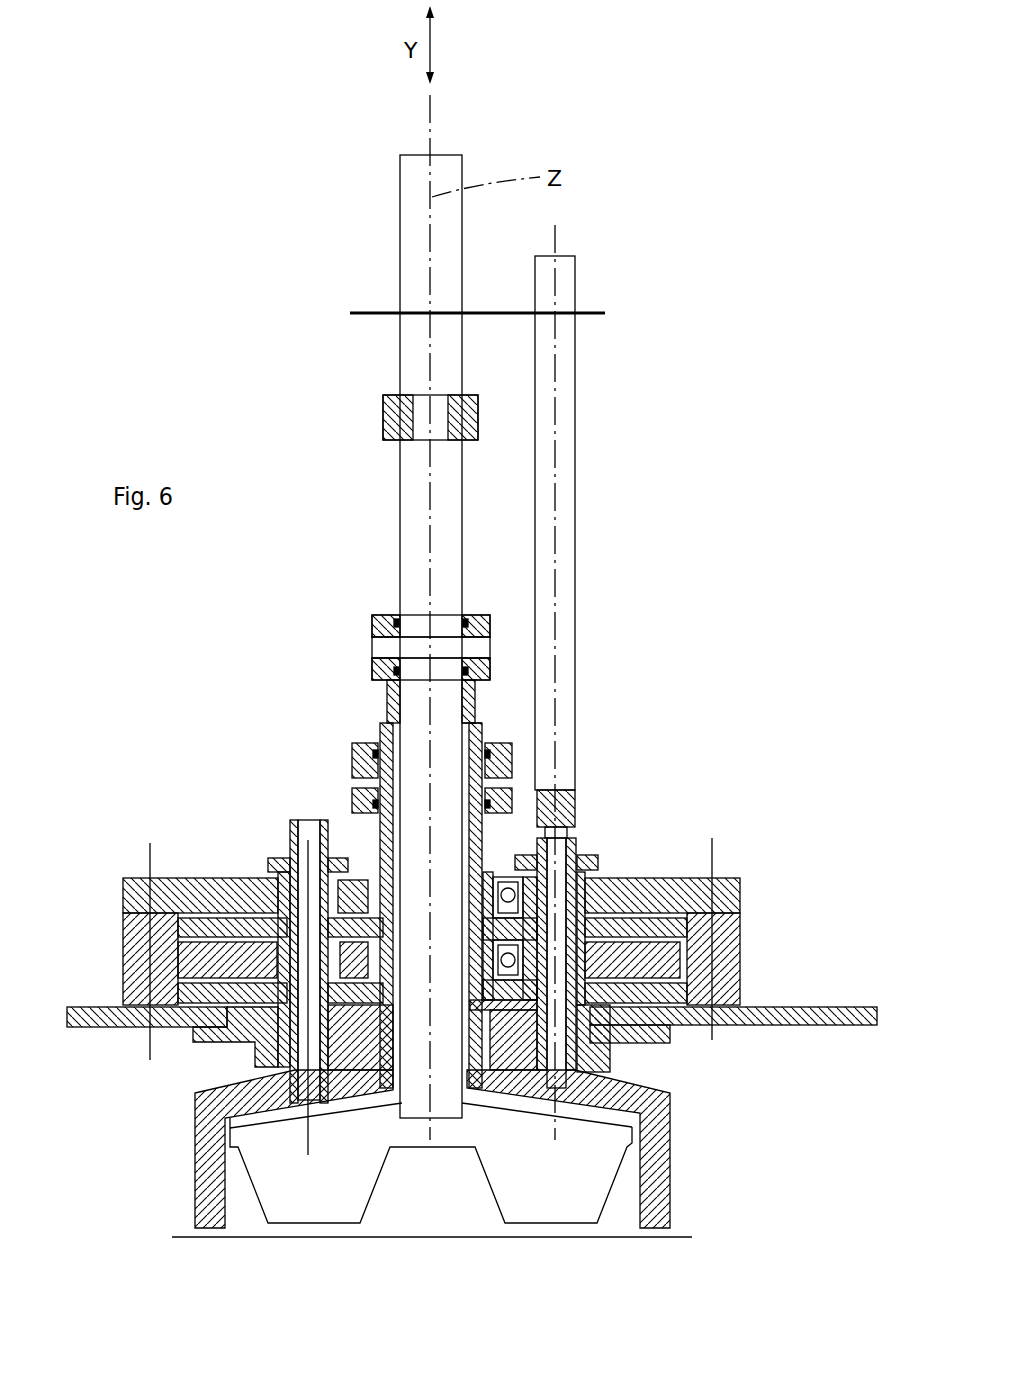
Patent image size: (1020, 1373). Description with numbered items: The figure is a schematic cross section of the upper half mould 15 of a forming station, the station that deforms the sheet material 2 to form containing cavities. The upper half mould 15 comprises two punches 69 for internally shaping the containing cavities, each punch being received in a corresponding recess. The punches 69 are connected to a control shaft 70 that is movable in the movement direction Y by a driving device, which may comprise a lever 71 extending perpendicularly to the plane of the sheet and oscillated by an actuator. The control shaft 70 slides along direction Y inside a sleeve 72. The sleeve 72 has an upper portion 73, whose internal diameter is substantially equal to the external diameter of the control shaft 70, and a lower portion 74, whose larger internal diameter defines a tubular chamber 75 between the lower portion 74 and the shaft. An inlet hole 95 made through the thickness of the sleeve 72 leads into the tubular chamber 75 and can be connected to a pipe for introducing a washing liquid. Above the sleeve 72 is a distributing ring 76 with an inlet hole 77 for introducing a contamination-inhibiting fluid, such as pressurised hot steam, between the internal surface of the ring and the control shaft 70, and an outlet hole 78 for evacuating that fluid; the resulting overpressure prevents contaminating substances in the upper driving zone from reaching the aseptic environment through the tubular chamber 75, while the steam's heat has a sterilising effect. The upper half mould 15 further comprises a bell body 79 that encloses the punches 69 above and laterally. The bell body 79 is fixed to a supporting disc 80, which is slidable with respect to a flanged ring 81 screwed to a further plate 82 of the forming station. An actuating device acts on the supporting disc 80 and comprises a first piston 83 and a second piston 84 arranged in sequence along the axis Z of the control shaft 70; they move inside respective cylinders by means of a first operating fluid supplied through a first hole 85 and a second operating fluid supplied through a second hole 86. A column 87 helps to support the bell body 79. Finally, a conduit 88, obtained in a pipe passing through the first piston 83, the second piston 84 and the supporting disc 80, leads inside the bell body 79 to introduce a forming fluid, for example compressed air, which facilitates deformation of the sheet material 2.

The sheet material 2 is at (637, 1238).
The upper half mould 15 is at (618, 729).
The punch 69 is at (245, 1172).
The control shaft 70 is at (415, 548).
The lever 71 is at (385, 410).
The sleeve 72 is at (480, 732).
The upper portion 73 is at (387, 695).
The lower portion 74 is at (478, 847).
The tubular chamber 75 is at (468, 822).
The distributing ring 76 is at (385, 616).
The inlet hole 77 is at (375, 652).
The outlet hole 78 is at (477, 655).
The bell body 79 is at (660, 1117).
The supporting disc 80 is at (255, 1048).
The flanged ring 81 is at (652, 1043).
The further plate 82 is at (812, 1005).
The first piston 83 is at (640, 927).
The second piston 84 is at (662, 980).
The first hole 85 is at (576, 886).
The second hole 86 is at (510, 968).
The column 87 is at (578, 400).
The conduit 88 is at (300, 845).
The inlet hole 95 is at (352, 768).